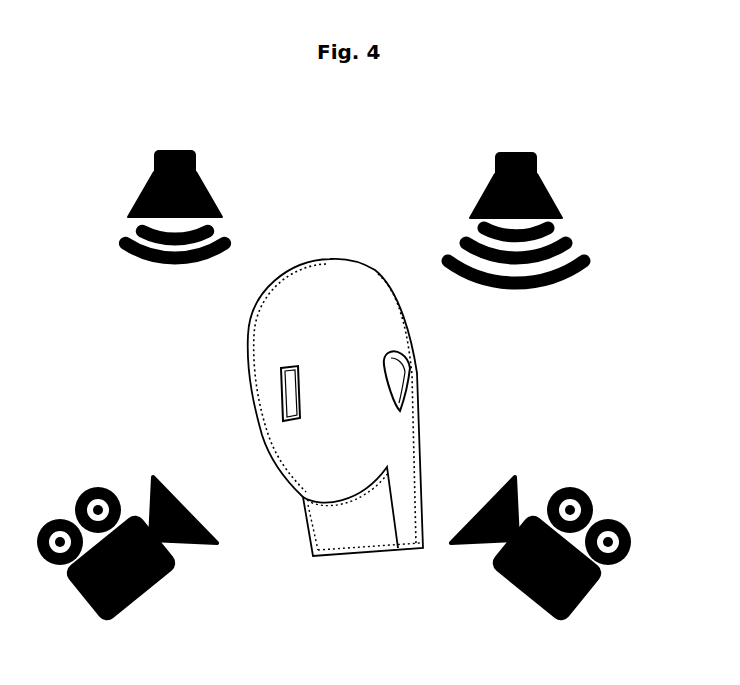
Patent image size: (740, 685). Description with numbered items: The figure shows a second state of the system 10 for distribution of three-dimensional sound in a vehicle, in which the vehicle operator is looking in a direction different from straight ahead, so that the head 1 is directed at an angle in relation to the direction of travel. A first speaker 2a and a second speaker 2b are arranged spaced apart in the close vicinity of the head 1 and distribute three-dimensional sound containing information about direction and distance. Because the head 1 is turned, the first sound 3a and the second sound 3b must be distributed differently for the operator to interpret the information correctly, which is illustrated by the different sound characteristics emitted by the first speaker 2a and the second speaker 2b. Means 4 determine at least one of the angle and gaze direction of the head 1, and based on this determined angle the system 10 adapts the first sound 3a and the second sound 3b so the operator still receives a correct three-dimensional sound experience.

The system for distribution of 3D sound 10 is at (553, 108).
The head 1 is at (347, 242).
The first speaker 2a is at (157, 165).
The second speaker 2b is at (536, 161).
The first sound 3a is at (173, 305).
The second sound 3b is at (517, 303).
The means to determine at least one of the angle and gaze direction of the head 4 is at (150, 593).